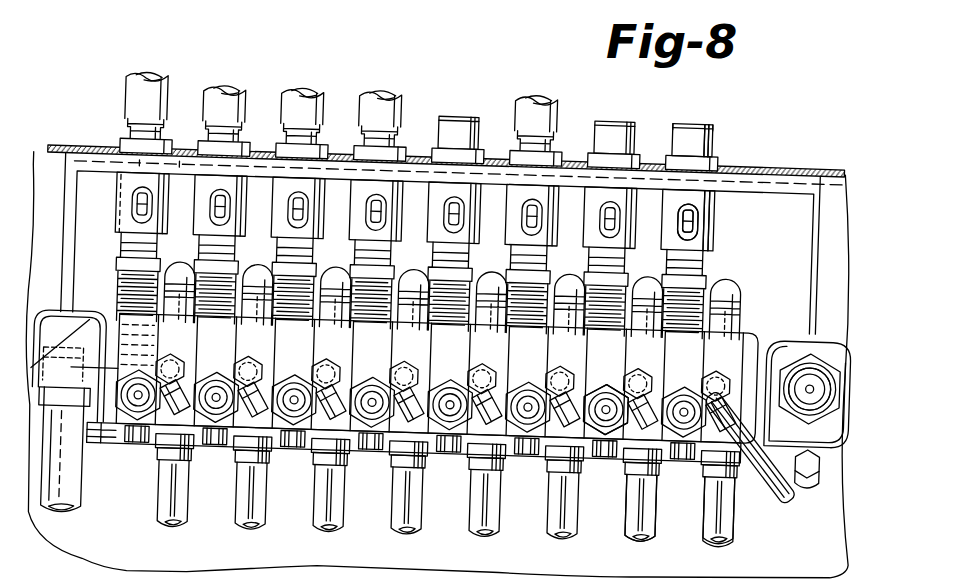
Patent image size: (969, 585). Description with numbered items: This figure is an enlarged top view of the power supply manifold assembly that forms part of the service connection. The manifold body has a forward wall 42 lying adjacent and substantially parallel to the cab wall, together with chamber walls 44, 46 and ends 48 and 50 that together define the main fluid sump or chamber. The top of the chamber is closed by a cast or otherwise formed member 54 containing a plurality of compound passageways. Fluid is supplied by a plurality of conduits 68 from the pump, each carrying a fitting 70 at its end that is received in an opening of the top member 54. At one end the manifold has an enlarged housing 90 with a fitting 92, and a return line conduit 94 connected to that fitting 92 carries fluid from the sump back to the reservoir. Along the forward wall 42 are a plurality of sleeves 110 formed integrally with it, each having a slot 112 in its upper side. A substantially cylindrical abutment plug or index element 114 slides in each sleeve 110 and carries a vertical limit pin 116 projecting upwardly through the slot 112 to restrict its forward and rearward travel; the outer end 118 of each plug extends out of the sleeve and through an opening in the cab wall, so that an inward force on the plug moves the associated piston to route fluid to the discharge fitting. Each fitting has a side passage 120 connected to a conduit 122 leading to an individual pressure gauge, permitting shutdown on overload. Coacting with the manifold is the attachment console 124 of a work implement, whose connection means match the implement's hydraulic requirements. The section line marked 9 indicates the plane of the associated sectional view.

The section line 9- 9 is at (38, 321).
The forward wall 42 is at (743, 156).
The chamber wall 44 is at (740, 298).
The chamber wall 46 is at (683, 447).
The end 48 is at (814, 362).
The end 50 is at (89, 332).
The top member 54 is at (681, 338).
The conduit 68 is at (760, 514).
The fitting 70 is at (764, 464).
The enlarged housing 90 is at (99, 447).
The fitting 92 is at (70, 324).
The return line conduit 94 is at (73, 512).
The sleeve 110 is at (717, 181).
The slot 112 is at (692, 208).
The abutment plug 114 is at (713, 120).
The vertical limit pin 116 is at (700, 197).
The outer end 118 is at (700, 105).
The side passage 120 is at (612, 368).
The conduit 122 is at (820, 462).
The attachment console 124 is at (795, 366).